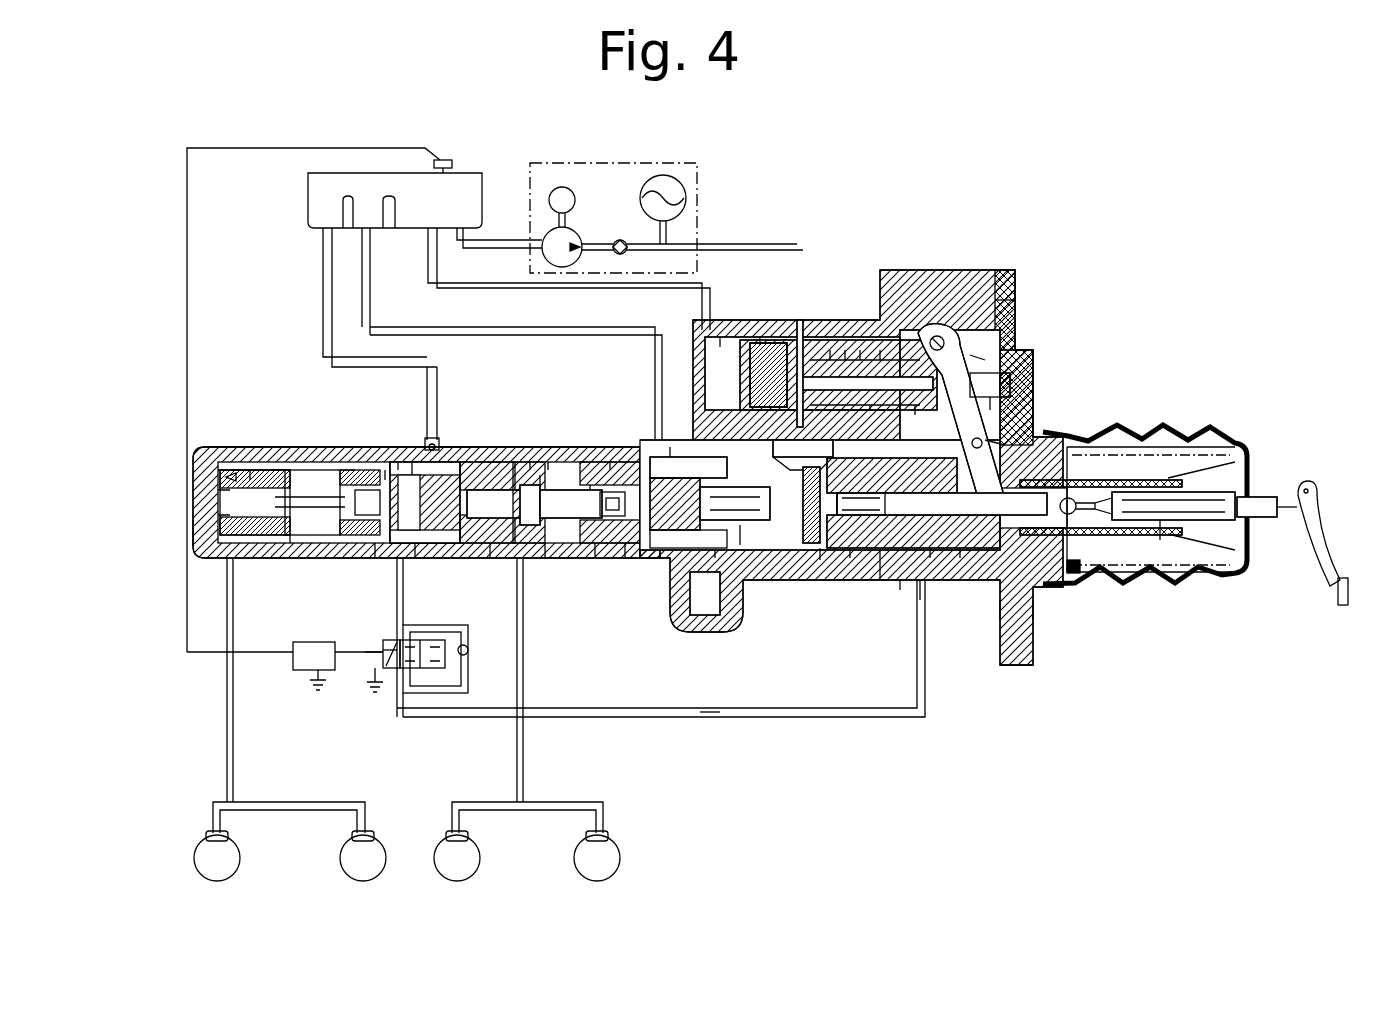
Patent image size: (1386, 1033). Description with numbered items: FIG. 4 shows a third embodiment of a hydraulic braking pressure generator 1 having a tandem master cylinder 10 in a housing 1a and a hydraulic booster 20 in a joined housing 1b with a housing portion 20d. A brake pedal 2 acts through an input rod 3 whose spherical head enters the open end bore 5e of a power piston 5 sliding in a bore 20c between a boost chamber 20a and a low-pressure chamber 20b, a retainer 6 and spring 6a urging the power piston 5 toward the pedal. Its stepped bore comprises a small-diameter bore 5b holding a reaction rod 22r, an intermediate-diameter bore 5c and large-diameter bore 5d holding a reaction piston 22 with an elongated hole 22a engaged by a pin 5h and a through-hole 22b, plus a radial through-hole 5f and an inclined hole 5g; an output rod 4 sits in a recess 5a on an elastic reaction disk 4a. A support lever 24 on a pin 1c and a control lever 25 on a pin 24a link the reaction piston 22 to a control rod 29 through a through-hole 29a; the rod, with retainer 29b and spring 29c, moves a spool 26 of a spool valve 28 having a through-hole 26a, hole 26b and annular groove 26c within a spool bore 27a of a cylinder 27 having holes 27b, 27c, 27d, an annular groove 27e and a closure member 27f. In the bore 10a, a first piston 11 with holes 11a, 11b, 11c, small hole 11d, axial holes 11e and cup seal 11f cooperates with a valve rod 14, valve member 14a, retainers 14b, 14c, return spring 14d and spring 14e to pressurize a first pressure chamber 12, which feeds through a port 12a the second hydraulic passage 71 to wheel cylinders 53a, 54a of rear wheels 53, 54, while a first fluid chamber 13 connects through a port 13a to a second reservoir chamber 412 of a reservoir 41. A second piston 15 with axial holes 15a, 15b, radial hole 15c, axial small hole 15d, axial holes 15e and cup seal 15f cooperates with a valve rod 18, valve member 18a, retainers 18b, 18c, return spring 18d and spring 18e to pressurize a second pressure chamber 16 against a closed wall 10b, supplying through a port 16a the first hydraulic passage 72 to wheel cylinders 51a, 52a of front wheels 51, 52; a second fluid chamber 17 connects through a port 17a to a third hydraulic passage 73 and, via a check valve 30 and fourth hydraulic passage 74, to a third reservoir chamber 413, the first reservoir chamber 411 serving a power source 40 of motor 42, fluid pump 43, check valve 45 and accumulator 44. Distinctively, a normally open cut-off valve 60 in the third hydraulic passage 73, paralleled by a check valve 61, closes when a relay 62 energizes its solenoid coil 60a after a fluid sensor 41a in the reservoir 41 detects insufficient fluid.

The hydraulic braking pressure generator 1 is at (1073, 433).
The housing 1a is at (452, 445).
The housing 1b is at (1016, 305).
The pin 1c is at (1016, 285).
The brake pedal 2 is at (1330, 586).
The input rod 3 is at (1244, 517).
The output rod 4 is at (740, 580).
The elastic reaction disk 4a is at (745, 545).
The power piston 5 is at (788, 548).
The recess 5a is at (808, 543).
The small-diameter bore 5b is at (821, 560).
The intermediate-diameter bore 5c is at (852, 558).
The large-diameter bore 5d is at (961, 558).
The open end bore 5e is at (1132, 535).
The through-hole 5f is at (1074, 573).
The inclined hole 5g is at (848, 515).
The pin 5h is at (931, 558).
The retainer 6 is at (1192, 568).
The spring 6a is at (1165, 540).
The tandem master cylinder 10 is at (476, 438).
The bore 10a is at (499, 460).
The closed wall 10b is at (193, 528).
The first piston 11 is at (690, 548).
The hole 11a is at (596, 558).
The hole 11b is at (715, 558).
The hole 11c is at (641, 558).
The small hole 11d is at (626, 558).
The axial holes 11e is at (612, 460).
The cup seal 11f is at (590, 483).
The first pressure chamber 12 is at (528, 520).
The port 12a is at (490, 558).
The first fluid chamber 13 is at (652, 457).
The port 13a is at (670, 447).
The valve rod 14 is at (562, 520).
The valve member 14a is at (612, 520).
The retainer 14b is at (532, 460).
The retainer 14c is at (548, 460).
The return spring 14d is at (542, 472).
The spring 14e is at (546, 558).
The second piston 15 is at (447, 543).
The axial hole 15a is at (376, 558).
The axial hole 15b is at (466, 693).
The radial hole 15c is at (412, 460).
The axial small hole 15d is at (383, 652).
The axial holes 15e is at (386, 468).
The cup seal 15f is at (398, 462).
The second pressure chamber 16 is at (225, 535).
The port 16a is at (218, 505).
The second fluid chamber 17 is at (428, 444).
The port 17a is at (420, 558).
The valve rod 18 is at (300, 535).
The valve member 18a is at (368, 515).
The retainer 18b is at (275, 470).
The retainer 18c is at (345, 470).
The return spring 18d is at (255, 468).
The spring 18e is at (290, 545).
The hydraulic booster 20 is at (1032, 328).
The boost chamber 20a is at (1016, 300).
The low-pressure chamber 20b is at (700, 345).
The bore 20c is at (882, 580).
The housing portion 20d is at (925, 600).
The reaction piston 22 is at (927, 660).
The elongated hole 22a is at (1000, 620).
The through-hole 22b is at (1034, 620).
The reaction rod 22r is at (905, 590).
The support lever 24 is at (1011, 385).
The pin 24a is at (993, 410).
The control lever 25 is at (1012, 482).
The spool 26 is at (788, 343).
The through-hole 26a is at (905, 350).
The hole 26b is at (884, 350).
The annular groove 26c is at (863, 350).
The cylinder 27 is at (790, 350).
The spool bore 27a is at (832, 350).
The hole 27b is at (846, 350).
The hole 27c is at (870, 405).
The hole 27d is at (720, 340).
The annular groove 27e is at (916, 405).
The closure member 27f is at (760, 340).
The spool valve 28 is at (797, 330).
The control rod 29 is at (1000, 400).
The through-hole 29a is at (990, 440).
The retainer 29b is at (975, 355).
The spring 29c is at (942, 336).
The check valve 30 is at (442, 327).
The power source 40 is at (697, 200).
The reservoir 41 is at (308, 204).
The fluid sensor 41a is at (443, 160).
The motor 42 is at (567, 187).
The fluid pump 43 is at (543, 240).
The accumulator 44 is at (652, 180).
The check valve 45 is at (618, 240).
The front wheel 51 is at (238, 865).
The wheel cylinder 51a is at (229, 836).
The front wheel 52 is at (378, 873).
The wheel cylinder 52a is at (372, 831).
The rear wheel 53 is at (478, 873).
The wheel cylinder 53a is at (468, 836).
The rear wheel 54 is at (618, 868).
The wheel cylinder 54a is at (608, 836).
The cut-off valve 60 is at (395, 670).
The solenoid coil 60a is at (375, 660).
The check valve 61 is at (458, 690).
The relay 62 is at (293, 652).
The second hydraulic passage 71 is at (524, 774).
The first hydraulic passage 72 is at (234, 774).
The third hydraulic passage 73 is at (622, 717).
The fourth hydraulic passage 74 is at (323, 328).
The first reservoir chamber 411 is at (428, 240).
The second reservoir chamber 412 is at (362, 240).
The third reservoir chamber 413 is at (323, 234).